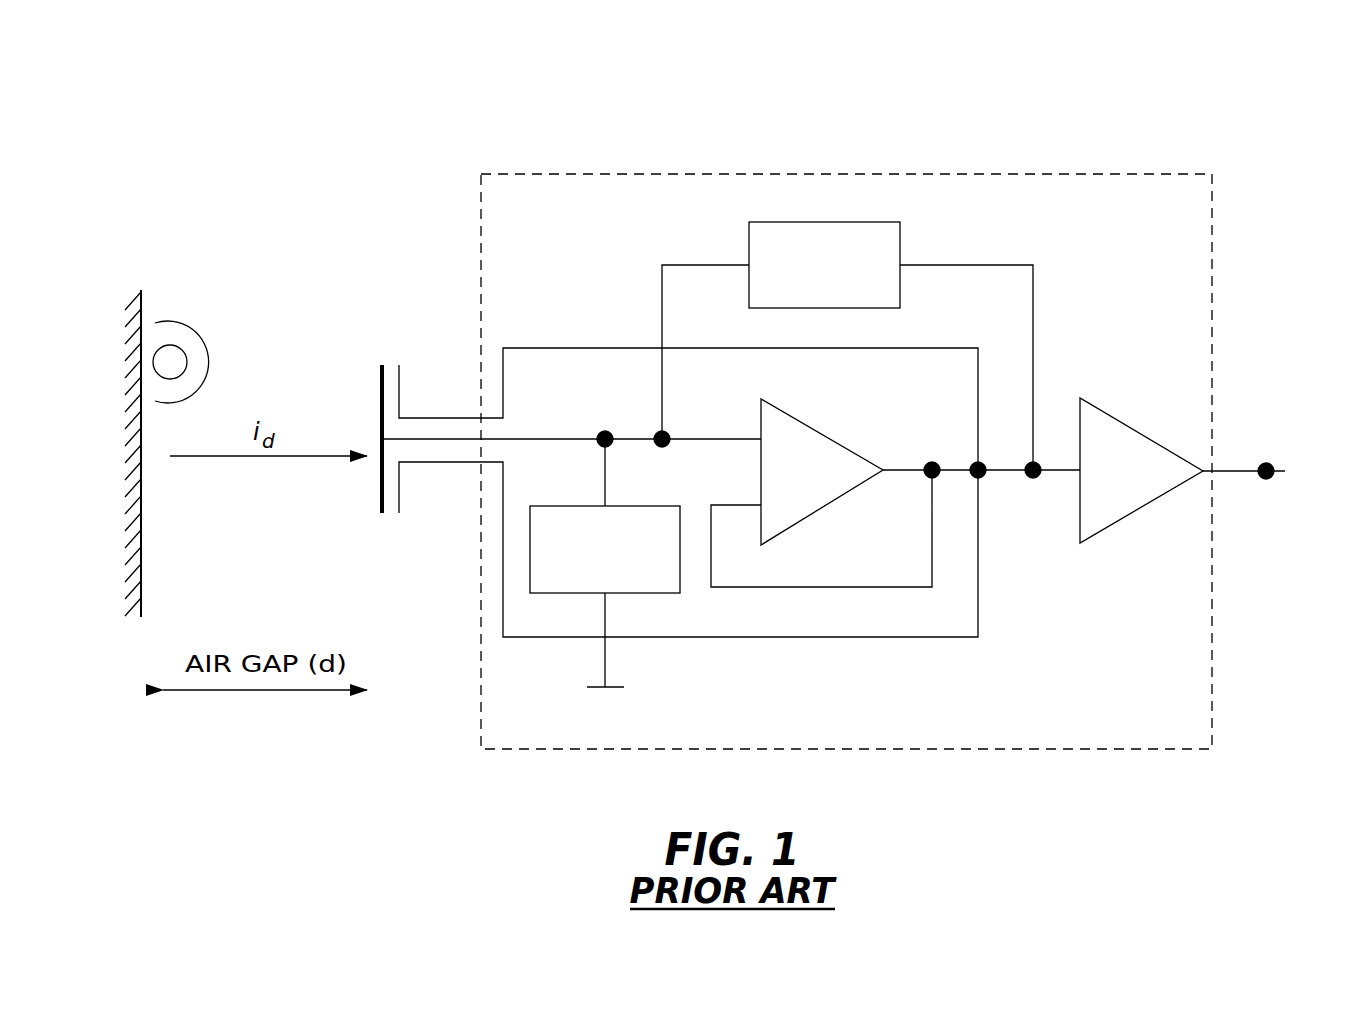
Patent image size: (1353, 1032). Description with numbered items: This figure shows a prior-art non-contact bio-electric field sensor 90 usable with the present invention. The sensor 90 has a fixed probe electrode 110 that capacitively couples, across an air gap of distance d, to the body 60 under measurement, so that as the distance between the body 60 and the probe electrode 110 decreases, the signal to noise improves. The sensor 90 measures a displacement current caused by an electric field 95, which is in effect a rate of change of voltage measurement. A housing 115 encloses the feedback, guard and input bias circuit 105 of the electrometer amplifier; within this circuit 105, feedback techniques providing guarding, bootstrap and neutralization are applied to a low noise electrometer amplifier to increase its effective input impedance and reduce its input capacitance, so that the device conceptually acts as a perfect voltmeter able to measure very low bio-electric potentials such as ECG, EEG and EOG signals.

The body 60 is at (135, 633).
The bio-electric field sensor 90 is at (897, 108).
The electric field 95 is at (174, 313).
The circuit 105 is at (983, 210).
The probe electrode 110 is at (388, 350).
The housing 115 is at (550, 172).